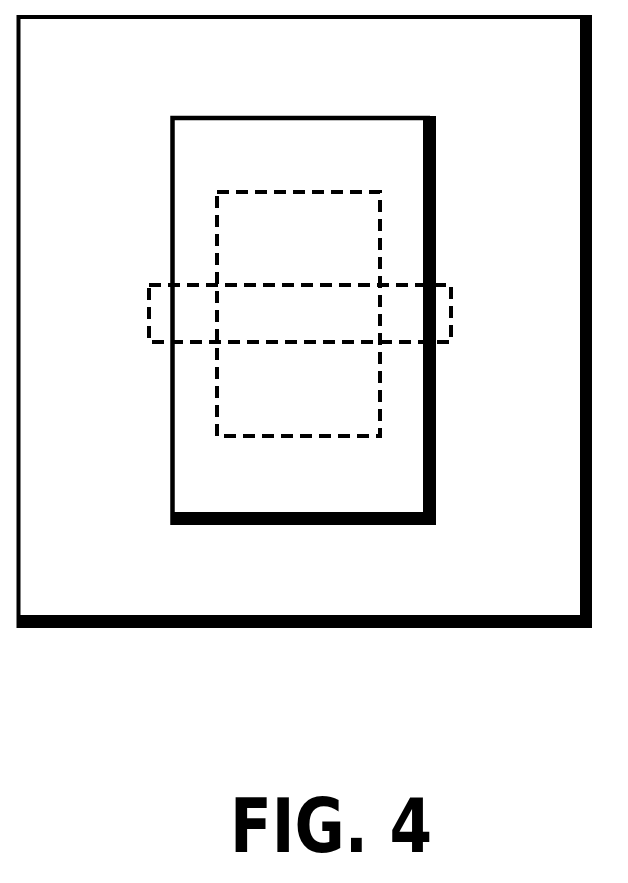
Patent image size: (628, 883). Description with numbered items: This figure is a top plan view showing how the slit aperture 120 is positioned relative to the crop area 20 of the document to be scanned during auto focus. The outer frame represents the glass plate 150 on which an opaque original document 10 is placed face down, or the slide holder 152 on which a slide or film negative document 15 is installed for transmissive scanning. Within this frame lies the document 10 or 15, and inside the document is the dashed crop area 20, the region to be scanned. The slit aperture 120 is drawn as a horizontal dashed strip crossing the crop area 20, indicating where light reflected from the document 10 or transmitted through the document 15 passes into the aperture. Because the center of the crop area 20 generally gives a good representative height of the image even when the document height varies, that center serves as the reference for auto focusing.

The original document 10 is at (303, 320).
The document 15 is at (342, 494).
The crop area 20 is at (317, 406).
The slit aperture 120 is at (330, 330).
The glass plate 150 is at (304, 321).
The slide holder 152 is at (363, 590).